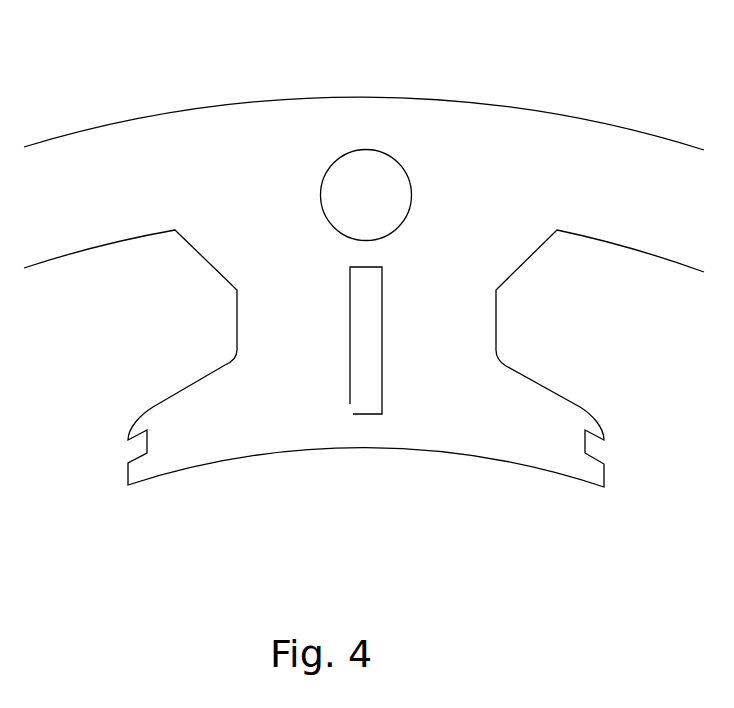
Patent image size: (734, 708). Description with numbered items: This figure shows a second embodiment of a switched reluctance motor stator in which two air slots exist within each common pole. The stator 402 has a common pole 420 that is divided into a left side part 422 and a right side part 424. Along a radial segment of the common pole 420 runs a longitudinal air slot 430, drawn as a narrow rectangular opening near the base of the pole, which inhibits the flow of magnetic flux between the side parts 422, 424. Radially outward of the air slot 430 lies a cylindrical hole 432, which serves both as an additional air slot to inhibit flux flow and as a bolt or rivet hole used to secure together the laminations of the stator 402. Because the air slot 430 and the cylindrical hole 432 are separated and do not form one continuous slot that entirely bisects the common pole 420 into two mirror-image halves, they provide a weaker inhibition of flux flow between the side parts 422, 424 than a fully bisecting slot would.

The stator 402 is at (195, 110).
The common pole 420 is at (500, 461).
The side part 422 is at (277, 308).
The side part 424 is at (452, 340).
The longitudinal air slot 430 is at (360, 397).
The cylindrical hole 432 is at (362, 187).